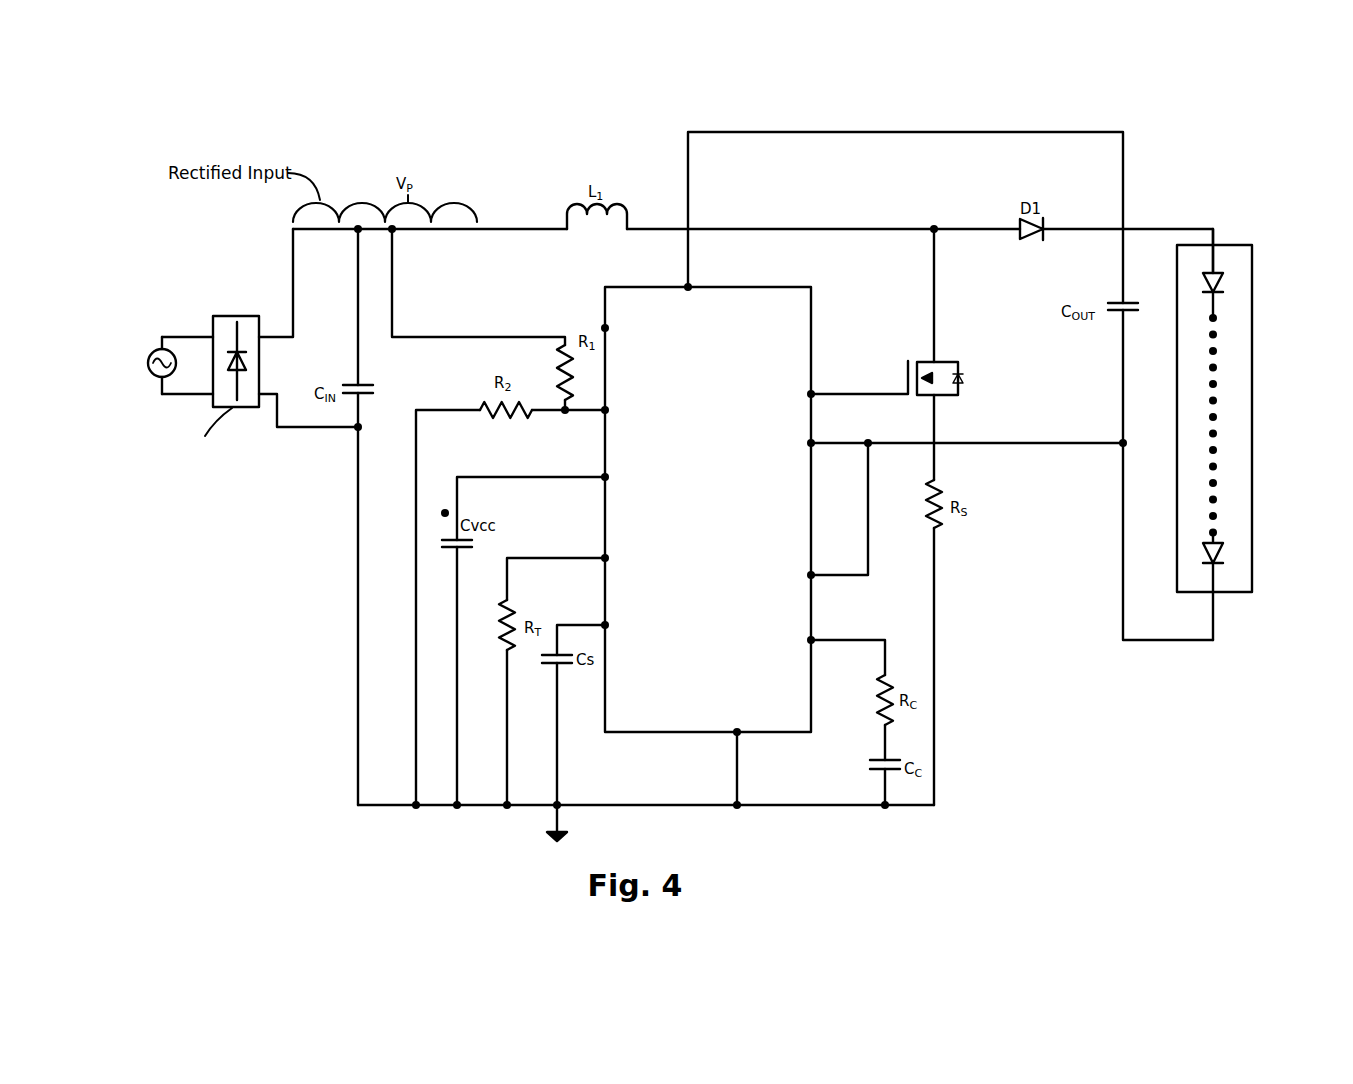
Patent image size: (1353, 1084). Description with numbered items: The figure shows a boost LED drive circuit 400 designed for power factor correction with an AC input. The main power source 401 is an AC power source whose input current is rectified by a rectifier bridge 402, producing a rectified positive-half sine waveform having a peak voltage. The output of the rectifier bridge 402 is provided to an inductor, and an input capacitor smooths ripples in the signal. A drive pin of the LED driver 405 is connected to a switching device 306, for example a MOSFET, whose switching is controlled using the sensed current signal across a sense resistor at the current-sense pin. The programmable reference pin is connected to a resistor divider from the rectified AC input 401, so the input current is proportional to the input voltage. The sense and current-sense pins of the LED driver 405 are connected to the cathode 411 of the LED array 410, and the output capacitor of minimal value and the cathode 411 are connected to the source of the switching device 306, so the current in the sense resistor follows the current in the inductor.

The boost LED drive circuit 400 is at (612, 154).
The main power source 401 is at (153, 350).
The rectifier bridge 402 is at (213, 319).
The LED driver 405 is at (738, 287).
The switching device 306 is at (952, 362).
The LED array 410 is at (1253, 282).
The cathode 411 is at (1215, 593).